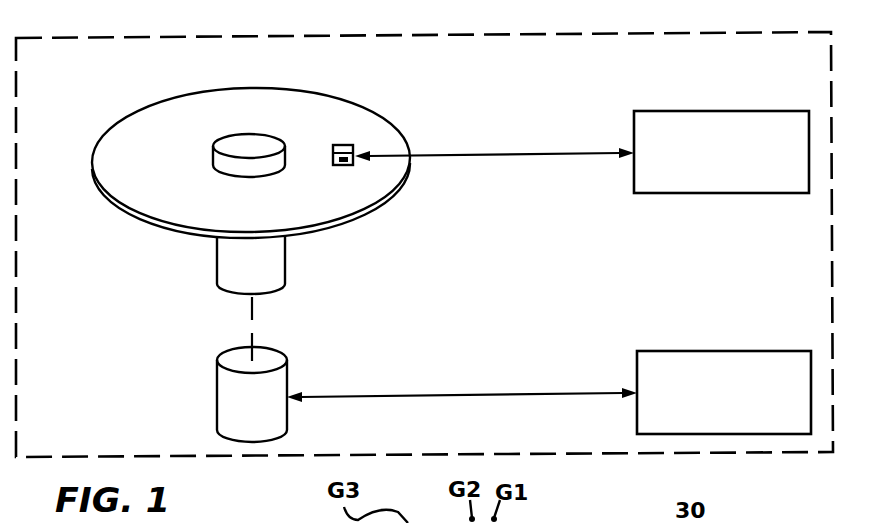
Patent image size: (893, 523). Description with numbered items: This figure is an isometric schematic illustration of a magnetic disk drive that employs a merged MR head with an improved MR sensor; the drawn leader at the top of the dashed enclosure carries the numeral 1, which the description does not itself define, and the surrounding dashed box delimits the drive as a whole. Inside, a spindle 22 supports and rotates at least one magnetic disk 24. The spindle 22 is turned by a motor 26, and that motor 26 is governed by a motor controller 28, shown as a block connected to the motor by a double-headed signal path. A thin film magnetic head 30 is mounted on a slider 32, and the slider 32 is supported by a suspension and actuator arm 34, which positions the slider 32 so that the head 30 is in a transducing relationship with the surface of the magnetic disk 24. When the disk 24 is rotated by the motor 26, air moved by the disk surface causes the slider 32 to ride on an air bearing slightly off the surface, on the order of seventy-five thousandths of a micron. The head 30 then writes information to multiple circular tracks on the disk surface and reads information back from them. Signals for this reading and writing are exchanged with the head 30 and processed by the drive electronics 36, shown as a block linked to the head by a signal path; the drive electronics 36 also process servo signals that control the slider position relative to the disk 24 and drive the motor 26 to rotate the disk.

The disk drive system 1 is at (424, 228).
The spindle 22 is at (217, 263).
The magnetic disk 24 is at (128, 128).
The motor 26 is at (217, 400).
The motor controller 28 is at (723, 351).
The thin film magnetic head 30 is at (347, 165).
The slider 32 is at (347, 143).
The suspension and actuator arm 34 is at (487, 156).
The drive electronics 36 is at (720, 111).